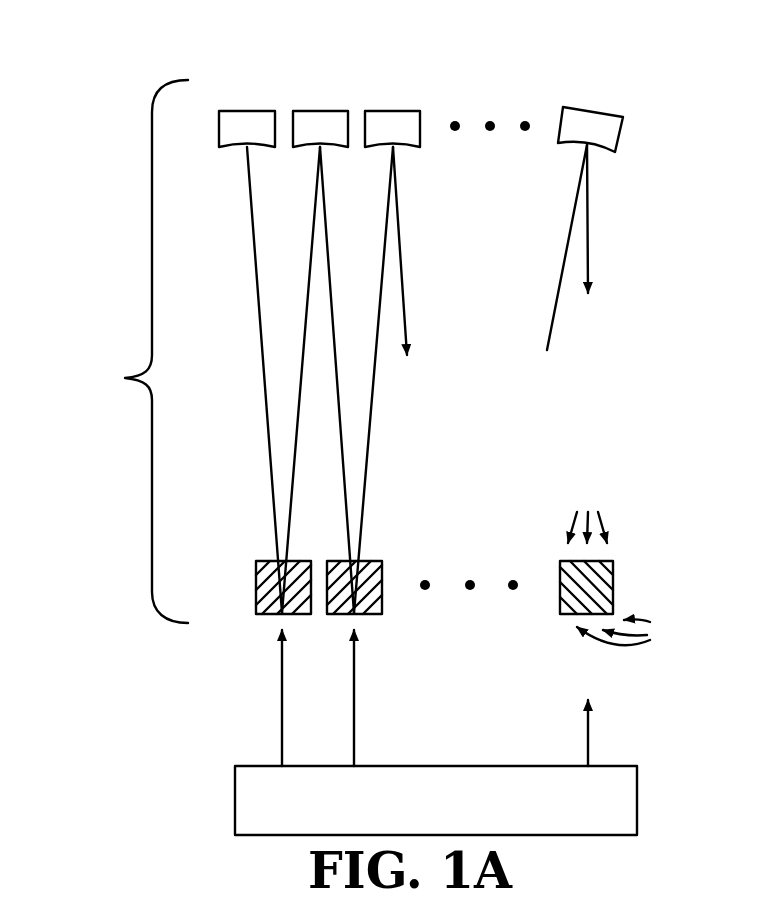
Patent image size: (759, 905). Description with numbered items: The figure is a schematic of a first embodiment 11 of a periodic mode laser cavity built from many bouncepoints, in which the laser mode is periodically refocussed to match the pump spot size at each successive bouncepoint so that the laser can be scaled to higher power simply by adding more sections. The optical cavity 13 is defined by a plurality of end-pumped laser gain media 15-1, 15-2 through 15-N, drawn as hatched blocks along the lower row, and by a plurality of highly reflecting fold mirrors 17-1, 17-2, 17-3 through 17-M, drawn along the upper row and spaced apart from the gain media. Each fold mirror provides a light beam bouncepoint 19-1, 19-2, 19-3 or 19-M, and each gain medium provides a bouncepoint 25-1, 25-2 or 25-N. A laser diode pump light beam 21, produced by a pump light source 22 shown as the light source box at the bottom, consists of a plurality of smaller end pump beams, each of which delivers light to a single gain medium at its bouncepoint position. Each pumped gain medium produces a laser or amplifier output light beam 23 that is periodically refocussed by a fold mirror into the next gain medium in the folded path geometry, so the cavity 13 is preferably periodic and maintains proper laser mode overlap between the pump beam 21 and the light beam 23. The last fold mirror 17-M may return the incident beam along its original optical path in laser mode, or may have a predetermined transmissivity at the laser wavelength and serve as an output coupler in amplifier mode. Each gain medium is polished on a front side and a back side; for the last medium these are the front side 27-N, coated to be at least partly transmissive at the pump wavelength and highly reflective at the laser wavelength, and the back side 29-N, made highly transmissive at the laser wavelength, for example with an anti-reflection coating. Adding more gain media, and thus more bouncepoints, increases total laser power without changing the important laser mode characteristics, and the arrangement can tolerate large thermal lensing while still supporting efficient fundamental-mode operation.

The first embodiment 11 is at (480, 73).
The optical cavity 13 is at (135, 351).
The laser gain medium 15-1 is at (270, 560).
The laser gain medium 15-2 is at (372, 560).
The laser gain medium 15-N is at (610, 590).
The fold mirror 17-1 is at (248, 110).
The fold mirror 17-2 is at (313, 110).
The fold mirror 17-3 is at (395, 110).
The last fold mirror 17-M is at (598, 107).
The bouncepoint 19-1 is at (231, 159).
The bouncepoint 19-2 is at (305, 154).
The bouncepoint 19-3 is at (409, 157).
The bouncepoint 19-M is at (599, 160).
The pump light beam 21 is at (353, 712).
The pump light source 22 is at (235, 798).
The light beam 23 is at (333, 353).
The bouncepoint 25-1 is at (268, 624).
The bouncepoint 25-2 is at (370, 624).
The bouncepoint 25-N is at (566, 642).
The front side 27-N is at (661, 639).
The back side 29-N is at (591, 507).